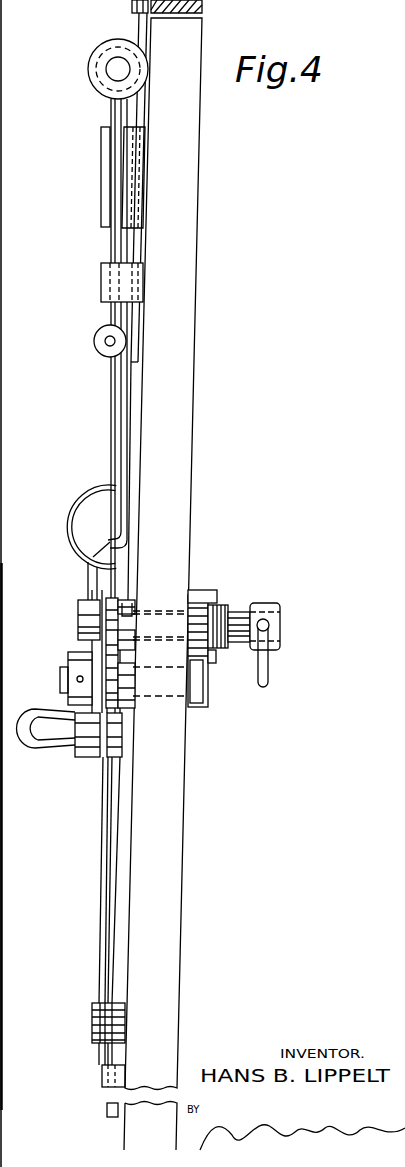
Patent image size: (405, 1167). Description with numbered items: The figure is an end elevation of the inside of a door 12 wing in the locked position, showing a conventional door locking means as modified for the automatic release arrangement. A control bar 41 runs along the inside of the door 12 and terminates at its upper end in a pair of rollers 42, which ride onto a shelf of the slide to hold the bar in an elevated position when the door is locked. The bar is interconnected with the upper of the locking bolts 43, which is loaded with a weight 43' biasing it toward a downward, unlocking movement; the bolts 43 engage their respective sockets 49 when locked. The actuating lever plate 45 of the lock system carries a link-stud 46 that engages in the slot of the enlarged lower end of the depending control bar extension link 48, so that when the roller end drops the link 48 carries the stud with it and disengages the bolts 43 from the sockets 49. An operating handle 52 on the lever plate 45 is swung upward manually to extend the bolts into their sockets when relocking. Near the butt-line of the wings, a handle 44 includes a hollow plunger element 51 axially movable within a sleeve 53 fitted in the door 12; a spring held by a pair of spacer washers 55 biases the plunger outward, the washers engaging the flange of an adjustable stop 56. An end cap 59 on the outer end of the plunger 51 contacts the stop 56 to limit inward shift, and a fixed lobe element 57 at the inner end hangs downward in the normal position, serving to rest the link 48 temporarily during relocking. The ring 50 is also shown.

The door 12 is at (183, 775).
The control bar 41 is at (113, 237).
The rollers 42 is at (98, 90).
The locking bolts 43 is at (118, 712).
The weight 43' is at (102, 177).
The handle 44 is at (268, 673).
The actuating lever plate 45 is at (100, 648).
The link-stud 46 is at (78, 613).
The control bar extension link 48 is at (112, 433).
The sockets 49 is at (132, 12).
The ring 50 is at (68, 517).
The plunger element 51 is at (240, 612).
The operating handle 52 is at (45, 747).
The sleeve 53 is at (222, 605).
The spacer washers 55 is at (193, 597).
The stop 56 is at (213, 661).
The lobe element 57 is at (127, 606).
The end cap 59 is at (280, 608).